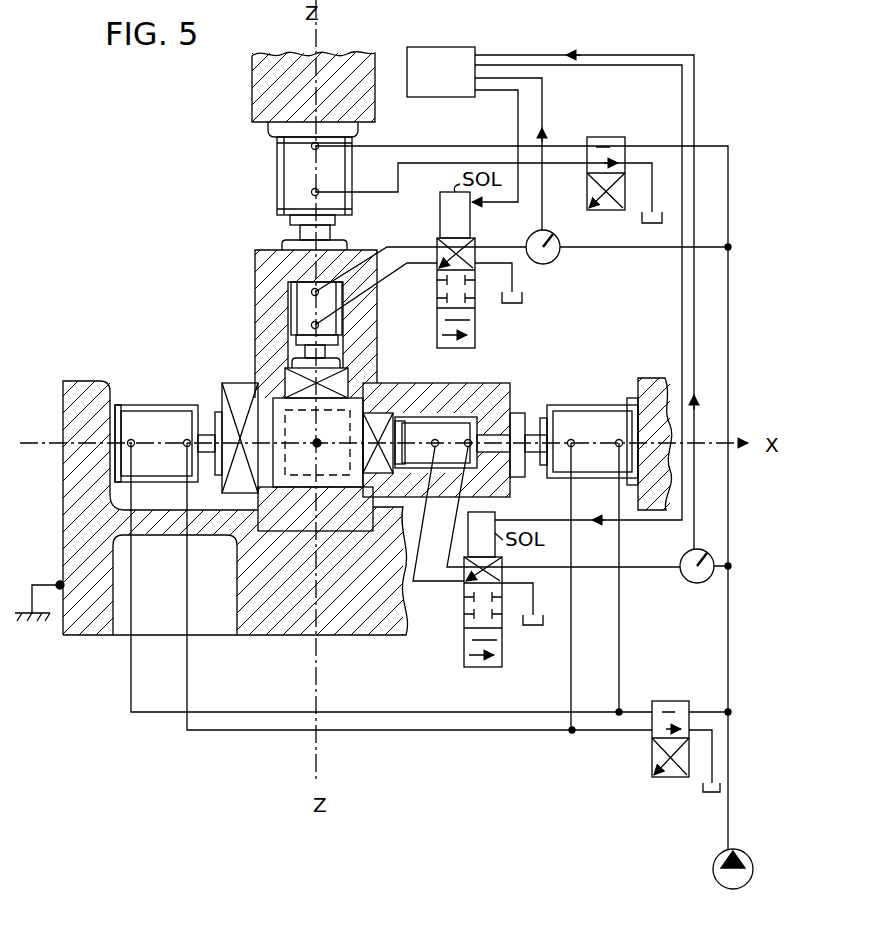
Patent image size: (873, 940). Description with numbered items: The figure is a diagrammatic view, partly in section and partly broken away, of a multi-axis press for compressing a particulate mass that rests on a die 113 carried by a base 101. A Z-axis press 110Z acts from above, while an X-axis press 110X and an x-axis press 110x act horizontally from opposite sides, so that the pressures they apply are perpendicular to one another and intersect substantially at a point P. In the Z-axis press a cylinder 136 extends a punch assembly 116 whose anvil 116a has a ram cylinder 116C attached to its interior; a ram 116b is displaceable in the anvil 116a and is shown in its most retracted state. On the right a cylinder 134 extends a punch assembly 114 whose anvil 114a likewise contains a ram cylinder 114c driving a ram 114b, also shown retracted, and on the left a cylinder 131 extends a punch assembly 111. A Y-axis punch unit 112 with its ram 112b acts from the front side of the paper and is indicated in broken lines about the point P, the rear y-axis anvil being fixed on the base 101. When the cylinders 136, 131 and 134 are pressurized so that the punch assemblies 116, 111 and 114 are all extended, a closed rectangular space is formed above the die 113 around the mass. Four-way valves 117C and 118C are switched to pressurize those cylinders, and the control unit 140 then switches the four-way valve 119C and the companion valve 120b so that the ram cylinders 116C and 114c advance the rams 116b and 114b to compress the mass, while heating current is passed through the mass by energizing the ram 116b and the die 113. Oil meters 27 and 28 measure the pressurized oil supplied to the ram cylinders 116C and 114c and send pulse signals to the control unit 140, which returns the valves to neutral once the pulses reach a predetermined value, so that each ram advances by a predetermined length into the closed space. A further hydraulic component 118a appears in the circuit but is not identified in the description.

The base 101 is at (76, 624).
The X-axis press 110X is at (200, 385).
The x-axis press 110x is at (560, 382).
The Z-axis press 110Z is at (250, 196).
The punch assembly 111 is at (230, 483).
The Y-axis punch unit 112 is at (315, 482).
The ram 112b is at (332, 476).
The die 113 is at (242, 546).
The punch assembly 114 is at (503, 382).
The anvil 114a is at (440, 415).
The ram 114b is at (372, 490).
The ram cylinder 114c is at (428, 417).
The punch assembly 116 is at (253, 262).
The anvil 116a is at (258, 250).
The ram 116b is at (287, 378).
The ram cylinder 116C is at (288, 305).
The four-way valve 117C is at (607, 135).
The pump 118a is at (719, 853).
The four-way valve 118C is at (650, 743).
The four-way valve 119C is at (440, 213).
The solenoid valve 120b is at (503, 652).
The cylinder 131 is at (138, 403).
The cylinder 134 is at (600, 400).
The cylinder 136 is at (272, 160).
The control unit 140 is at (467, 47).
The oil meter 27 is at (558, 258).
The oil meter 28 is at (692, 582).
The point of intersection P is at (314, 450).